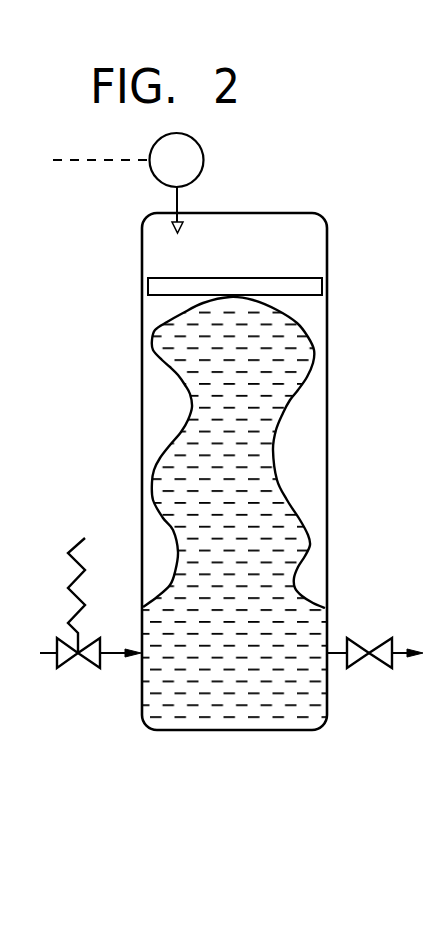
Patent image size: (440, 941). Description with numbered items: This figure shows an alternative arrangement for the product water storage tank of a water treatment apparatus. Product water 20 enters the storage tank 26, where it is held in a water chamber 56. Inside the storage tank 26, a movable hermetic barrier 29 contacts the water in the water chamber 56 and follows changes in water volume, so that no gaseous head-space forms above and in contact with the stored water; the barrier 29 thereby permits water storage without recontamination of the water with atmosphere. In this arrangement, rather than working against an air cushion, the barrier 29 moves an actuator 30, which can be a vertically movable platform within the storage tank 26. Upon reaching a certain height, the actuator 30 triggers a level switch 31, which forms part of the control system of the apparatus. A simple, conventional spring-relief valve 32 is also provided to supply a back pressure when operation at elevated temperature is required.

The product water 20 is at (112, 656).
The storage tank 26 is at (327, 431).
The movable hermetic barrier 29 is at (306, 527).
The actuator 30 is at (300, 278).
The level switch 31 is at (198, 141).
The spring-relief valve 32 is at (70, 664).
The water chamber 56 is at (272, 698).